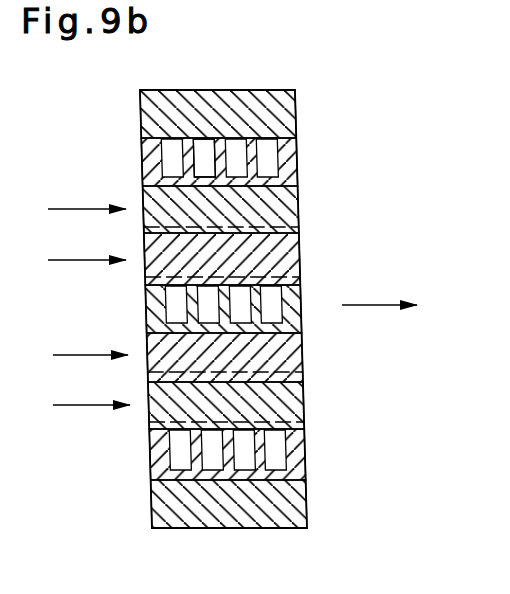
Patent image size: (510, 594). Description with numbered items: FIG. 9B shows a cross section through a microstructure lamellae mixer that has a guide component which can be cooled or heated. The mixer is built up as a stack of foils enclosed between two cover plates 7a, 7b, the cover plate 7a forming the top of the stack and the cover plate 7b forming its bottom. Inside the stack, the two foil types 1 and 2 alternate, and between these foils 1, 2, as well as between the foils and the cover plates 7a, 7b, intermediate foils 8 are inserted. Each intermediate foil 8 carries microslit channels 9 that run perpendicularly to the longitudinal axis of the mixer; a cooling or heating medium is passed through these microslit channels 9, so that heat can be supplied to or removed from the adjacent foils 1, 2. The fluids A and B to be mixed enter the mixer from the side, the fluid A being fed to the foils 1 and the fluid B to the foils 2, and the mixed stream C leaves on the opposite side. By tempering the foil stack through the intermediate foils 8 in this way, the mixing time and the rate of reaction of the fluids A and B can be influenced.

The cover plate 7a is at (282, 104).
The cover plate 7b is at (285, 500).
The intermediate foil 8 is at (146, 165).
The microslit channel 9 is at (202, 148).
The foil 1 is at (277, 207).
The foil 2 is at (287, 257).
The fluid A is at (88, 266).
The fluid B is at (89, 318).
The product C flow C is at (377, 293).